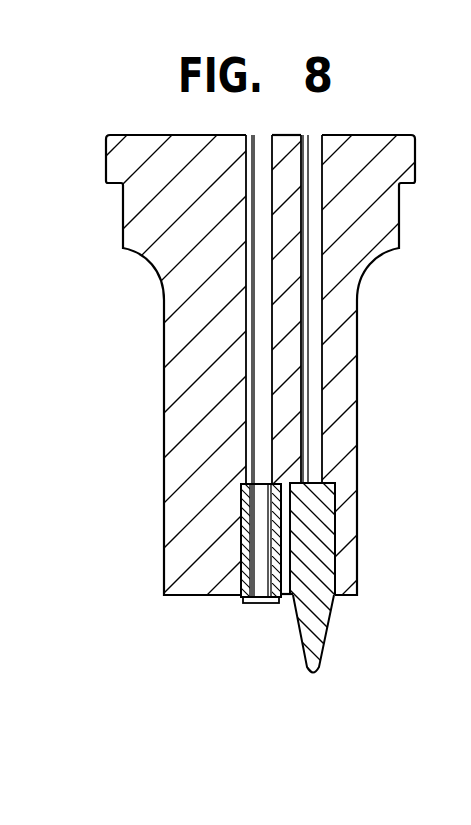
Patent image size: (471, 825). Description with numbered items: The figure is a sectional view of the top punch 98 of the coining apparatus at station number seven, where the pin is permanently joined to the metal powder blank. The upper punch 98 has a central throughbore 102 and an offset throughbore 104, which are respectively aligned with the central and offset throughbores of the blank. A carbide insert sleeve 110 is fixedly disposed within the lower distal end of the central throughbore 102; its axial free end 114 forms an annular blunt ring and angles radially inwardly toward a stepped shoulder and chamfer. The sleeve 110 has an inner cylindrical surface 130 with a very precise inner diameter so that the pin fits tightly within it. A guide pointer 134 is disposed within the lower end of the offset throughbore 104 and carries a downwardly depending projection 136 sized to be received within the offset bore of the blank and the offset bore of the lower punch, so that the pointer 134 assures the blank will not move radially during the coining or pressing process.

The top punch 98 is at (130, 192).
The central throughbore 102 is at (247, 392).
The offset throughbore 104 is at (323, 365).
The inner cylindrical surface 130 is at (248, 497).
The carbide insert sleeve 110 is at (233, 582).
The axial free end 114 is at (252, 603).
The guide pointer 134 is at (320, 602).
The downwardly depending projection 136 is at (318, 664).